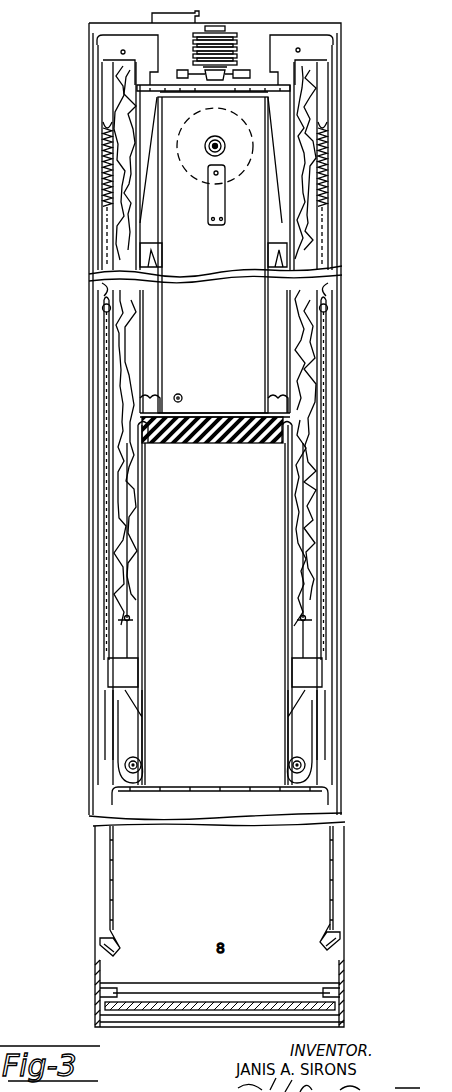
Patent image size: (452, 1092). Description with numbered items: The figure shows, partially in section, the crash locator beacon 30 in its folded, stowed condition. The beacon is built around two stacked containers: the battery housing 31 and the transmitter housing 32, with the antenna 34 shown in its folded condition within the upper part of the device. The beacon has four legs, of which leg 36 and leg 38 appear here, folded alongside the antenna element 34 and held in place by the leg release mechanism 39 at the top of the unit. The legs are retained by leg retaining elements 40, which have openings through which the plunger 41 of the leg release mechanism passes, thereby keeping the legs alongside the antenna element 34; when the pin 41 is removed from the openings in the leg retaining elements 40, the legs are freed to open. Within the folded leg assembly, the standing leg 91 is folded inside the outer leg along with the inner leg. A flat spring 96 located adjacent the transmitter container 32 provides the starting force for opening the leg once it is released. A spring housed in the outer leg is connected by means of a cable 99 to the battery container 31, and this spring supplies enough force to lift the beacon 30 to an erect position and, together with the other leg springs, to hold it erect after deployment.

The crash locator beacon 30 is at (342, 382).
The battery housing 31 is at (337, 887).
The transmitter housing 32 is at (272, 580).
The antenna 34 is at (252, 213).
The leg 36 is at (307, 358).
The leg 38 is at (127, 218).
The leg release mechanism 39 is at (243, 82).
The leg retaining elements 40 is at (140, 87).
The plunger 41 is at (190, 70).
The standing leg 91 is at (298, 515).
The flat spring 96 is at (290, 457).
The cable 99 is at (105, 947).